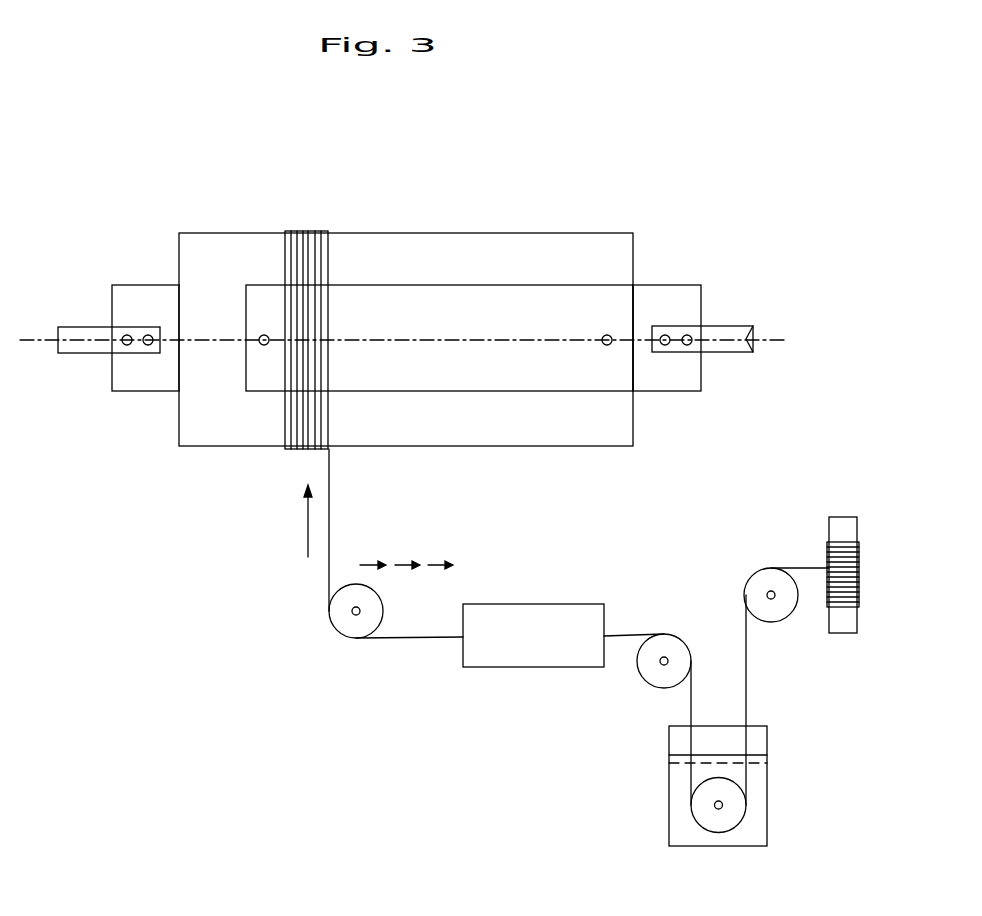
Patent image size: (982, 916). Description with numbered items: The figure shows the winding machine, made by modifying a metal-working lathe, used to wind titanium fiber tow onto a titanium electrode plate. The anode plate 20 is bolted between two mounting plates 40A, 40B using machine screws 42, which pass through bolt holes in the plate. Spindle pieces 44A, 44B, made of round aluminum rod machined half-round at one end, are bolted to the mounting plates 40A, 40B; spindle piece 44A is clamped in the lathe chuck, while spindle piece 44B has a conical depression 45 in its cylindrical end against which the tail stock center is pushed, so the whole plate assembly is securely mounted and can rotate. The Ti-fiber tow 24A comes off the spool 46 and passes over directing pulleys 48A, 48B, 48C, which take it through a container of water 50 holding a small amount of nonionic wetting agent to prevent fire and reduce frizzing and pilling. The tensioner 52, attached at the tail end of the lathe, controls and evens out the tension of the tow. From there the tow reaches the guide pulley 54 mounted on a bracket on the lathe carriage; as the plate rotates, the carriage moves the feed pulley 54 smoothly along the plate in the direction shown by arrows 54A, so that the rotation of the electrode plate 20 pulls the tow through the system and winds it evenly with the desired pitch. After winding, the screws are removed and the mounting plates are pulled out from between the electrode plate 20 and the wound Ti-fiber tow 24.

The anode plate 20 is at (440, 243).
The Ti-fiber tow 24 is at (312, 232).
The Ti-fiber tow 24A is at (330, 515).
The mounting plate 40A is at (137, 303).
The mounting plate 40B is at (652, 300).
The machine screws 42 is at (603, 335).
The spindle piece 44A is at (78, 348).
The spindle piece 44B is at (735, 345).
The conical depression 45 is at (748, 340).
The spool 46 is at (845, 625).
The directing pulley 48A is at (763, 580).
The directing pulley 48B is at (705, 815).
The directing pulley 48C is at (652, 673).
The container of water 50 is at (753, 823).
The tensioner assembly 52 is at (542, 617).
The guide pulley 54 is at (342, 618).
The feed direction arrows 54A is at (398, 565).